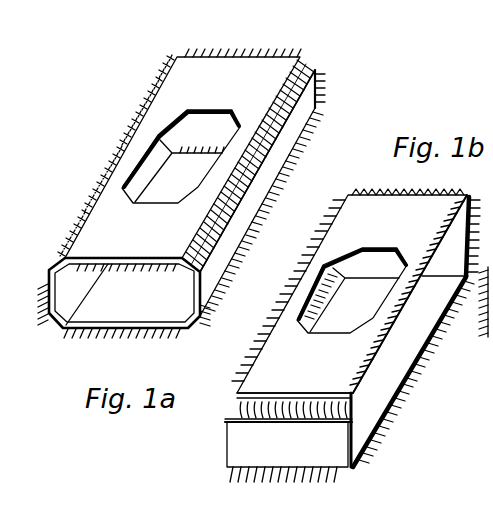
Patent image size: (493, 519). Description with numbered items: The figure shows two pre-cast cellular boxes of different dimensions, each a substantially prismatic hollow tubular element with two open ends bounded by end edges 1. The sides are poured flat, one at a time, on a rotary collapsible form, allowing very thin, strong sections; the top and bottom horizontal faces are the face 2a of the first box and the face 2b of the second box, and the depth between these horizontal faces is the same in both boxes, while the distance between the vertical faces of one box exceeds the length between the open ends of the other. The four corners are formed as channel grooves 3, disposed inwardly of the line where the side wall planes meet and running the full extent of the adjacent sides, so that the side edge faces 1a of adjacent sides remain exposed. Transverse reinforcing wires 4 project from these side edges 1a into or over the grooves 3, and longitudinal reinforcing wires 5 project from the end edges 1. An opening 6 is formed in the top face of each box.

In FIG. 1A, the end edges 1 is at (58, 277).
In FIG. 1B, the end edges 1 is at (472, 258).
In FIG. 1B, the side edge faces 1a is at (268, 408).
In FIG. 1A, the horizontal face 2a is at (288, 62).
In FIG. 1B, the horizontal face 2b is at (316, 384).
In FIG. 1A, the channel grooves 3 is at (50, 323).
In FIG. 1A, the transverse reinforcing wires 4 is at (163, 68).
In FIG. 1B, the transverse reinforcing wires 4 is at (300, 467).
In FIG. 1A, the longitudinal reinforcing wires 5 is at (142, 266).
In FIG. 1B, the longitudinal reinforcing wires 5 is at (423, 353).
In FIG. 1A, the openings 6 is at (208, 127).
In FIG. 1B, the openings 6 is at (368, 262).